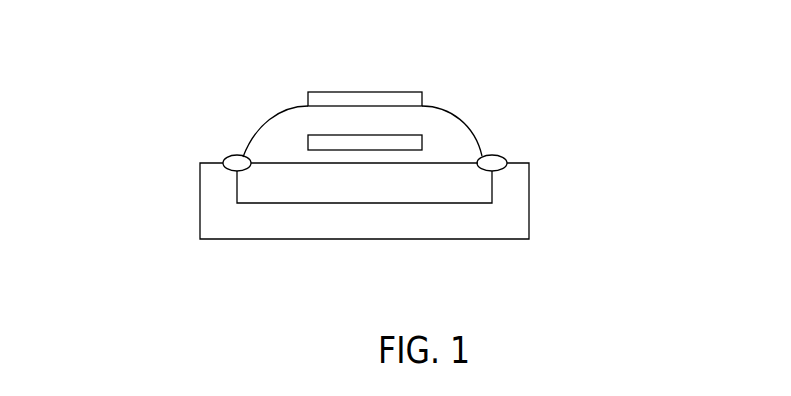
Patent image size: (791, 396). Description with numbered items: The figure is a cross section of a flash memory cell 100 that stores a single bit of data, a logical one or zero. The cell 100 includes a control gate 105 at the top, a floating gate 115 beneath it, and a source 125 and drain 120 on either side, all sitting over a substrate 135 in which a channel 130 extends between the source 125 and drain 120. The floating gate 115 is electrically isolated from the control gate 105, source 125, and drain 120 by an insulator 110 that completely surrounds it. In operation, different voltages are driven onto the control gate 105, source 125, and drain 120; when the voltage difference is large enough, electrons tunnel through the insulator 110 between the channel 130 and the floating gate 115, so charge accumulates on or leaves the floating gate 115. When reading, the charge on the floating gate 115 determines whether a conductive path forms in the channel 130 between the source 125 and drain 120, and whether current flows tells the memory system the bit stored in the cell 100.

The flash memory cell 100 is at (184, 63).
The control gate 105 is at (402, 92).
The insulator 110 is at (453, 112).
The floating gate 115 is at (422, 142).
The drain 120 is at (504, 157).
The source 125 is at (229, 156).
The channel 130 is at (352, 203).
The substrate 135 is at (463, 239).